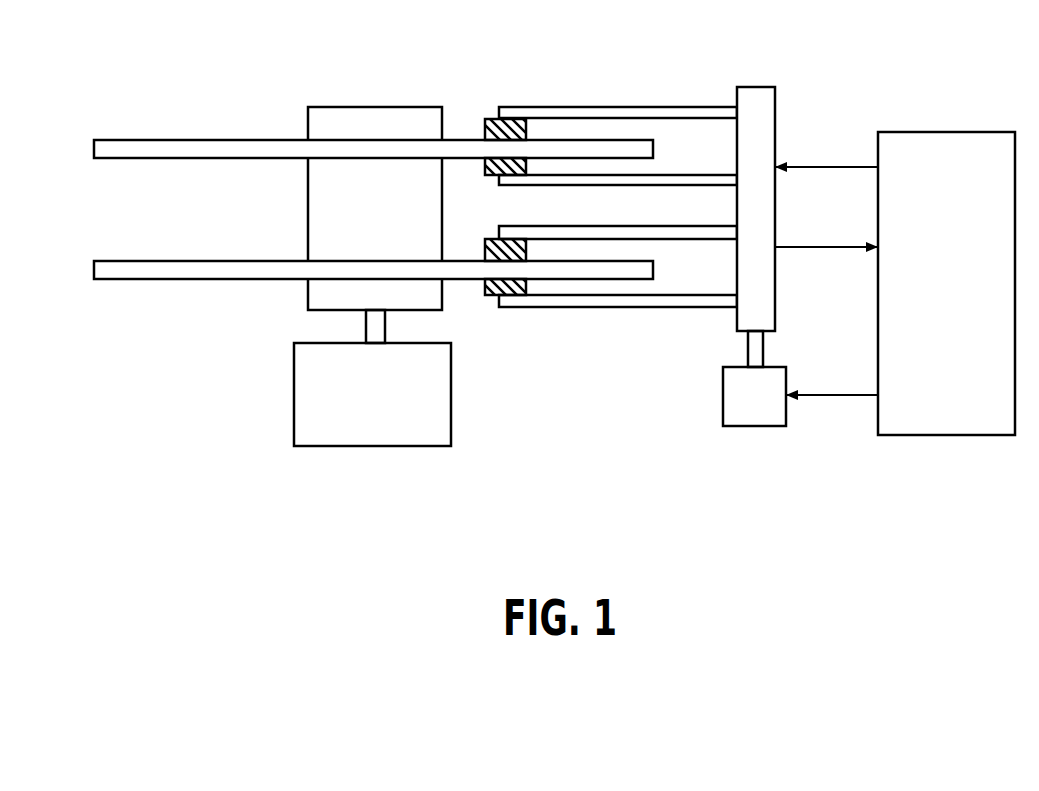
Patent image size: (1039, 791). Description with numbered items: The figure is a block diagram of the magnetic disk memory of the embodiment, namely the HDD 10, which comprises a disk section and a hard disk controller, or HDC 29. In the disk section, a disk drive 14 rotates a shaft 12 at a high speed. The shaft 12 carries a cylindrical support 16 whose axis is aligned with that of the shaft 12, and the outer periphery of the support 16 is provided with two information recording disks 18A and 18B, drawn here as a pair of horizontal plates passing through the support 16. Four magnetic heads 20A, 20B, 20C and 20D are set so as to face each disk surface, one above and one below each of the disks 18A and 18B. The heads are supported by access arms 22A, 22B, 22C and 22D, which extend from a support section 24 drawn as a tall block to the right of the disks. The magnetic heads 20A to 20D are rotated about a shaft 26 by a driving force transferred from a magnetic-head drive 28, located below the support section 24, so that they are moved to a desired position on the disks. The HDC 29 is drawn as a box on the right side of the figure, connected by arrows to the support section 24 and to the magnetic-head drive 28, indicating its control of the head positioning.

The HDD 10 is at (246, 106).
The shaft 12 is at (365, 325).
The disk drive 14 is at (386, 411).
The cylindrical support 16 is at (385, 107).
The information recording disk 18A is at (167, 140).
The information recording disk 18B is at (168, 280).
The magnetic head 20A is at (487, 120).
The magnetic head 20B is at (487, 172).
The magnetic head 20C is at (485, 252).
The magnetic head 20D is at (487, 294).
The access arm 22A is at (602, 106).
The access arm 22B is at (600, 186).
The access arm 22C is at (610, 226).
The access arm 22D is at (610, 308).
The support section 24 is at (776, 107).
The shaft 26 is at (765, 350).
The magnetic-head drive 28 is at (723, 392).
The hard disk controller 29 is at (954, 325).